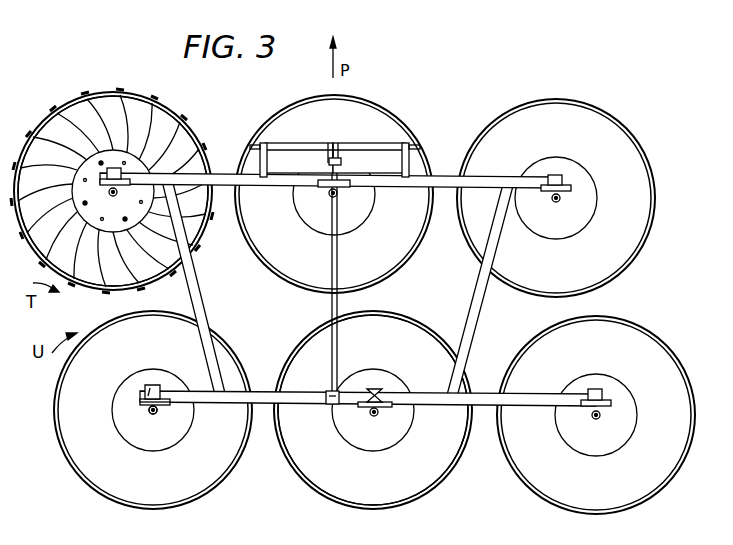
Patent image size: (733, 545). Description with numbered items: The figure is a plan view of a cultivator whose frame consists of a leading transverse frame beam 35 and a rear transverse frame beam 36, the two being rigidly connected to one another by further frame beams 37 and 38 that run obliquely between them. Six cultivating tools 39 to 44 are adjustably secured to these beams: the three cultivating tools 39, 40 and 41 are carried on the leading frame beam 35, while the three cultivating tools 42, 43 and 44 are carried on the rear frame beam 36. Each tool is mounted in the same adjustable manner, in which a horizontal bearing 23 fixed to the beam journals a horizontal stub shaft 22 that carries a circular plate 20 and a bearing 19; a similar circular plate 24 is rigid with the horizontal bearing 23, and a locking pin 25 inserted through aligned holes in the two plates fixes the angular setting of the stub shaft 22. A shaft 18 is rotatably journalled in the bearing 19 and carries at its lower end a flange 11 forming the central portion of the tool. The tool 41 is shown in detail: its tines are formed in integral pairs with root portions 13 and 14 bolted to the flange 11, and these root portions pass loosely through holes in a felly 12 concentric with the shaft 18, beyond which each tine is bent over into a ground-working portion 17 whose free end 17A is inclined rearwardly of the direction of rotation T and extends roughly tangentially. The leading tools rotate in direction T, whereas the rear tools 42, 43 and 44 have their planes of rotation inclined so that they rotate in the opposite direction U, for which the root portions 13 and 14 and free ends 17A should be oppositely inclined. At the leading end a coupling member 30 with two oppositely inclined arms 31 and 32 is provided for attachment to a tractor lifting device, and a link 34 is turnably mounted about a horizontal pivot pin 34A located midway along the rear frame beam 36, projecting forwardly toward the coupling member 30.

The flange 11 is at (135, 158).
The felly 12 is at (330, 508).
The root portion 13 is at (95, 262).
The root portion 14 is at (115, 266).
The ground-working portion 17 is at (128, 292).
The free end 17A is at (88, 290).
The shaft 18 is at (150, 413).
The bearing 19 is at (158, 410).
The circular plate 20 is at (140, 401).
The stub shaft 22 is at (158, 386).
The horizontal bearing 23 is at (150, 386).
The circular plate 24 is at (140, 400).
The locking pin 25 is at (566, 198).
The coupling member 30 is at (335, 153).
The arm 31 is at (380, 148).
The arm 32 is at (292, 148).
The link 34 is at (338, 276).
The pivot pin 34A is at (328, 405).
The leading transverse frame beam 35 is at (450, 177).
The rear transverse frame beam 36 is at (490, 390).
The frame beam 37 is at (475, 291).
The frame beam 38 is at (201, 290).
The cultivating tool 39 is at (648, 150).
The cultivating tool 40 is at (436, 119).
The cultivating tool 41 is at (116, 203).
The cultivating tool 42 is at (537, 503).
The cultivating tool 43 is at (408, 508).
The cultivating tool 44 is at (193, 500).